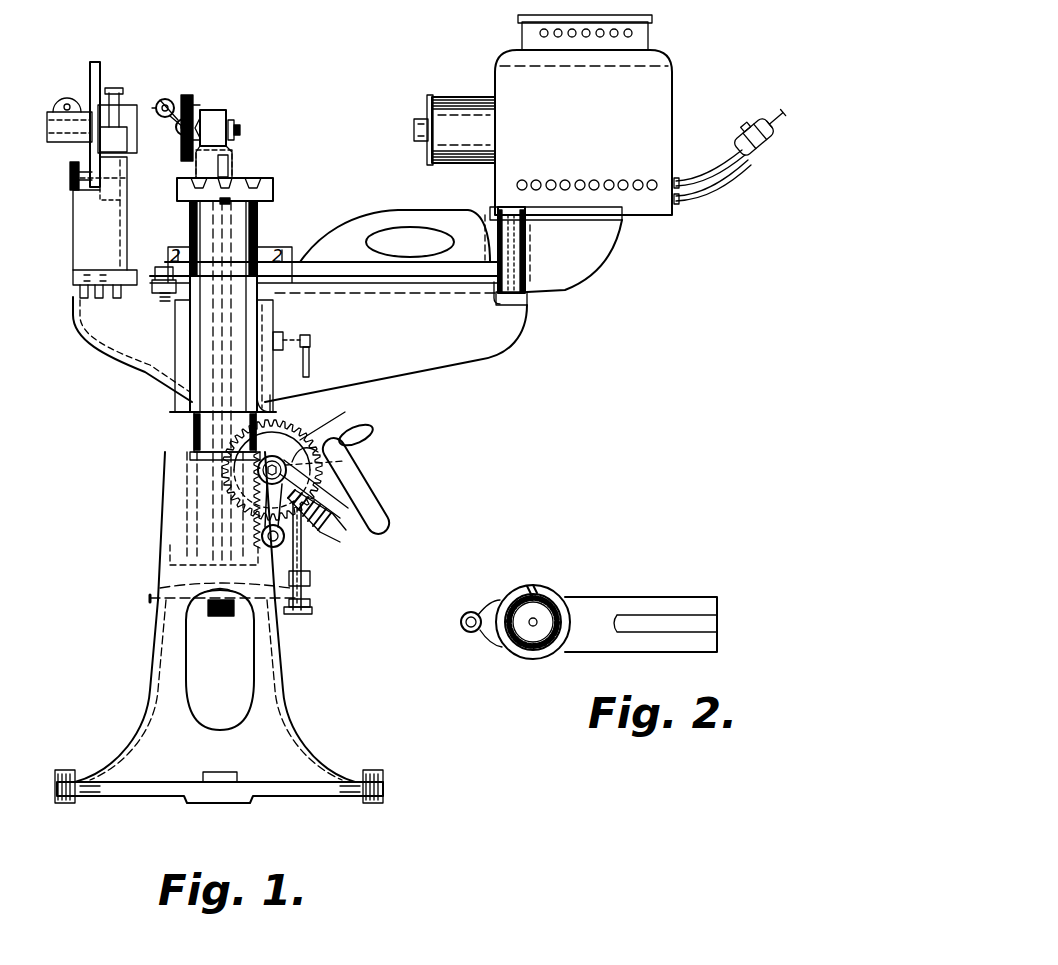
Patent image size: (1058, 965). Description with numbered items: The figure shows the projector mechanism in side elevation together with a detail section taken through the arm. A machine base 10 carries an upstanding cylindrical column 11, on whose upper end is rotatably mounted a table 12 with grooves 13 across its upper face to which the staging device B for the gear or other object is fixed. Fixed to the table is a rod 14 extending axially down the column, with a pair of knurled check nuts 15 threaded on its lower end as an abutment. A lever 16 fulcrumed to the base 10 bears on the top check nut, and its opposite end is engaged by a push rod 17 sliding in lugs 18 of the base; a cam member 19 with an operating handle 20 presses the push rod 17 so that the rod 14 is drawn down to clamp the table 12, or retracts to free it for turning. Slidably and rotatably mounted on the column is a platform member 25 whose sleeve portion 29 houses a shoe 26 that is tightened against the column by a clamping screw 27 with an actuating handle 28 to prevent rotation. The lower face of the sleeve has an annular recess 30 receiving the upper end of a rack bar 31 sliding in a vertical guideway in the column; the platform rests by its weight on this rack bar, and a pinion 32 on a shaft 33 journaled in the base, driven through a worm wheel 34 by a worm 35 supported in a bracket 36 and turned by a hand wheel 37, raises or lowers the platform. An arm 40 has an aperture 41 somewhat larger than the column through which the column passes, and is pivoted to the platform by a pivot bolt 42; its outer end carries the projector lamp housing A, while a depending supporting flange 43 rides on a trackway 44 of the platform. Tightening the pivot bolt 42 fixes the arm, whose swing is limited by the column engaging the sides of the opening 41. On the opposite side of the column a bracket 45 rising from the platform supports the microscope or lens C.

In FIG. 1, the projector lamp housing A is at (602, 115).
In FIG. 1, the staging device B is at (224, 115).
In FIG. 1, the microscope or lens C is at (100, 88).
In FIG. 1, the machine base 10 is at (300, 700).
In FIG. 1, the cylindrical column 11 is at (188, 430).
In FIG. 2, the cylindrical column 11 is at (548, 608).
In FIG. 1, the table 12 is at (274, 195).
In FIG. 1, the grooves 13 is at (258, 178).
In FIG. 1, the rod 14 is at (198, 452).
In FIG. 1, the knurled check nuts 15 is at (210, 605).
In FIG. 1, the lever 16 is at (305, 614).
In FIG. 1, the push rod 17 is at (152, 602).
In FIG. 1, the lugs 18 is at (311, 578).
In FIG. 1, the cam member 19 is at (345, 468).
In FIG. 1, the operating handle or lever 20 is at (343, 540).
In FIG. 1, the platform member 25 is at (488, 362).
In FIG. 1, the shoe 26 is at (273, 315).
In FIG. 1, the clamping screw 27 is at (312, 342).
In FIG. 1, the actuating handle 28 is at (310, 374).
In FIG. 1, the sleeve portion 29 is at (272, 405).
In FIG. 1, the annular recess 30 is at (185, 410).
In FIG. 1, the rack bar 31 is at (292, 432).
In FIG. 1, the pinion 32 is at (368, 428).
In FIG. 1, the shaft 33 is at (288, 466).
In FIG. 1, the worm wheel 34 is at (339, 424).
In FIG. 1, the worm 35 is at (300, 518).
In FIG. 1, the bracket 36 is at (342, 538).
In FIG. 1, the actuating hand wheel 37 is at (368, 495).
In FIG. 1, the arm 40 is at (372, 226).
In FIG. 2, the arm 40 is at (628, 605).
In FIG. 2, the aperture 41 is at (542, 600).
In FIG. 1, the pivot bolt 42 is at (164, 264).
In FIG. 2, the pivot bolt 42 is at (471, 611).
In FIG. 1, the depending supporting flange 43 is at (528, 262).
In FIG. 1, the trackway 44 is at (528, 306).
In FIG. 1, the bracket 45 is at (80, 245).